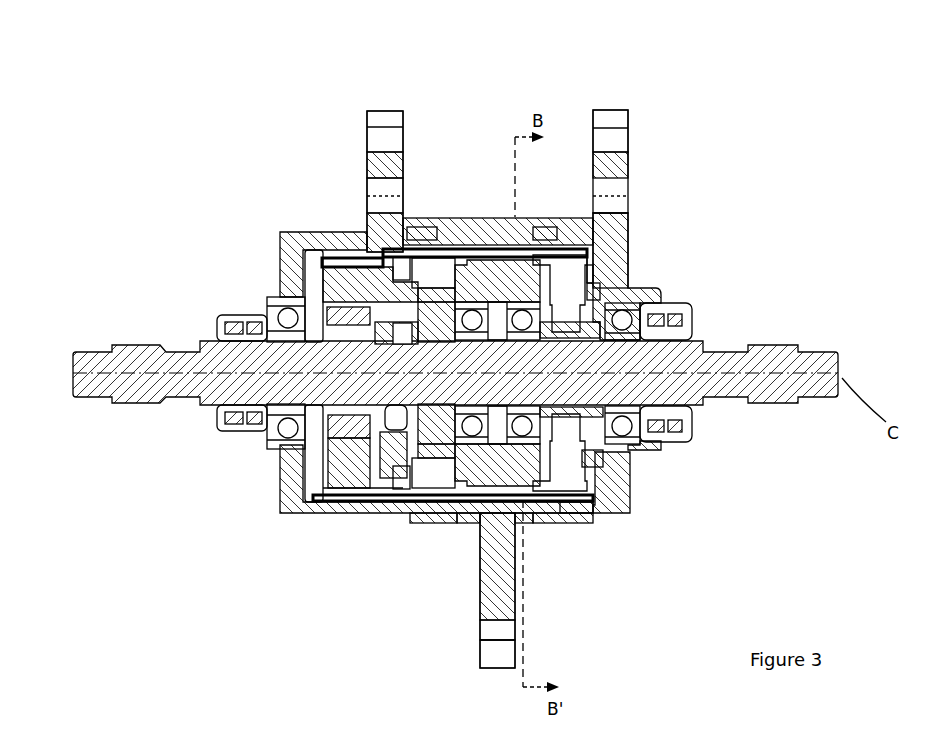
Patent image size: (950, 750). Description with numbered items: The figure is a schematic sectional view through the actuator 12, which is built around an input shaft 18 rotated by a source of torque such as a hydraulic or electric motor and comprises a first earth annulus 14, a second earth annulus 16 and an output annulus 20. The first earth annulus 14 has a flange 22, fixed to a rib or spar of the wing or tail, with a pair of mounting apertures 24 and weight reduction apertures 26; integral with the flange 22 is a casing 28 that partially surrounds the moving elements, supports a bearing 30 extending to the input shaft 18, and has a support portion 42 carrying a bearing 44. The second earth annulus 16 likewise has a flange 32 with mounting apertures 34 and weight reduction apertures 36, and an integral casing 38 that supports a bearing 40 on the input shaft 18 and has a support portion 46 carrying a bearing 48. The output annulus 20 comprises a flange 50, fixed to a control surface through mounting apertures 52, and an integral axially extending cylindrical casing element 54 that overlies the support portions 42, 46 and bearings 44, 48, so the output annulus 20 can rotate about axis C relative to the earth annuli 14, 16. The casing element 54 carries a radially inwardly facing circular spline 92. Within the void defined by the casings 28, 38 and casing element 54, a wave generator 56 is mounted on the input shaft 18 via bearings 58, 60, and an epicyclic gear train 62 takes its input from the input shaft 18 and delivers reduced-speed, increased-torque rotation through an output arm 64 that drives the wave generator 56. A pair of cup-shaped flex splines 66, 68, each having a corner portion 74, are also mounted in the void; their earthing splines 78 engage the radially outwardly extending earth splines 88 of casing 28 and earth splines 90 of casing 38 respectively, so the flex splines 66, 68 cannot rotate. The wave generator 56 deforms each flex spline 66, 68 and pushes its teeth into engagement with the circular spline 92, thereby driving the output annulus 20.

The actuator 12 is at (345, 302).
The first earth annulus 14 is at (337, 202).
The second earth annulus 16 is at (662, 213).
The input shaft 18 is at (70, 384).
The output annulus 20 is at (522, 655).
The flange 22 is at (380, 120).
The mounting aperture 24 is at (388, 138).
The weight reduction aperture 26 is at (367, 190).
The casing 28 is at (305, 232).
The bearing 30 is at (267, 304).
The flange 32 is at (612, 110).
The mounting aperture 34 is at (618, 138).
The weight reduction aperture 36 is at (618, 185).
The casing 38 is at (620, 243).
The bearing 40 is at (630, 436).
The support portion 42 is at (370, 502).
The bearing 44 is at (455, 512).
The support portion 46 is at (593, 516).
The bearing 48 is at (578, 514).
The flange 50 is at (507, 596).
The mounting aperture 52 is at (486, 630).
The casing element 54 is at (552, 217).
The wave generator 56 is at (508, 273).
The bearing 58 is at (455, 440).
The bearing 60 is at (590, 472).
The epicyclic gear train 62 is at (420, 313).
The output arm 64 is at (329, 290).
The flex spline 66 is at (410, 470).
The flex spline 68 is at (604, 268).
The corner portion 74 is at (470, 440).
The earthing splines 78 is at (612, 269).
The earth splines 88 is at (440, 468).
The earth splines 90 is at (628, 290).
The circular spline 92 is at (472, 217).